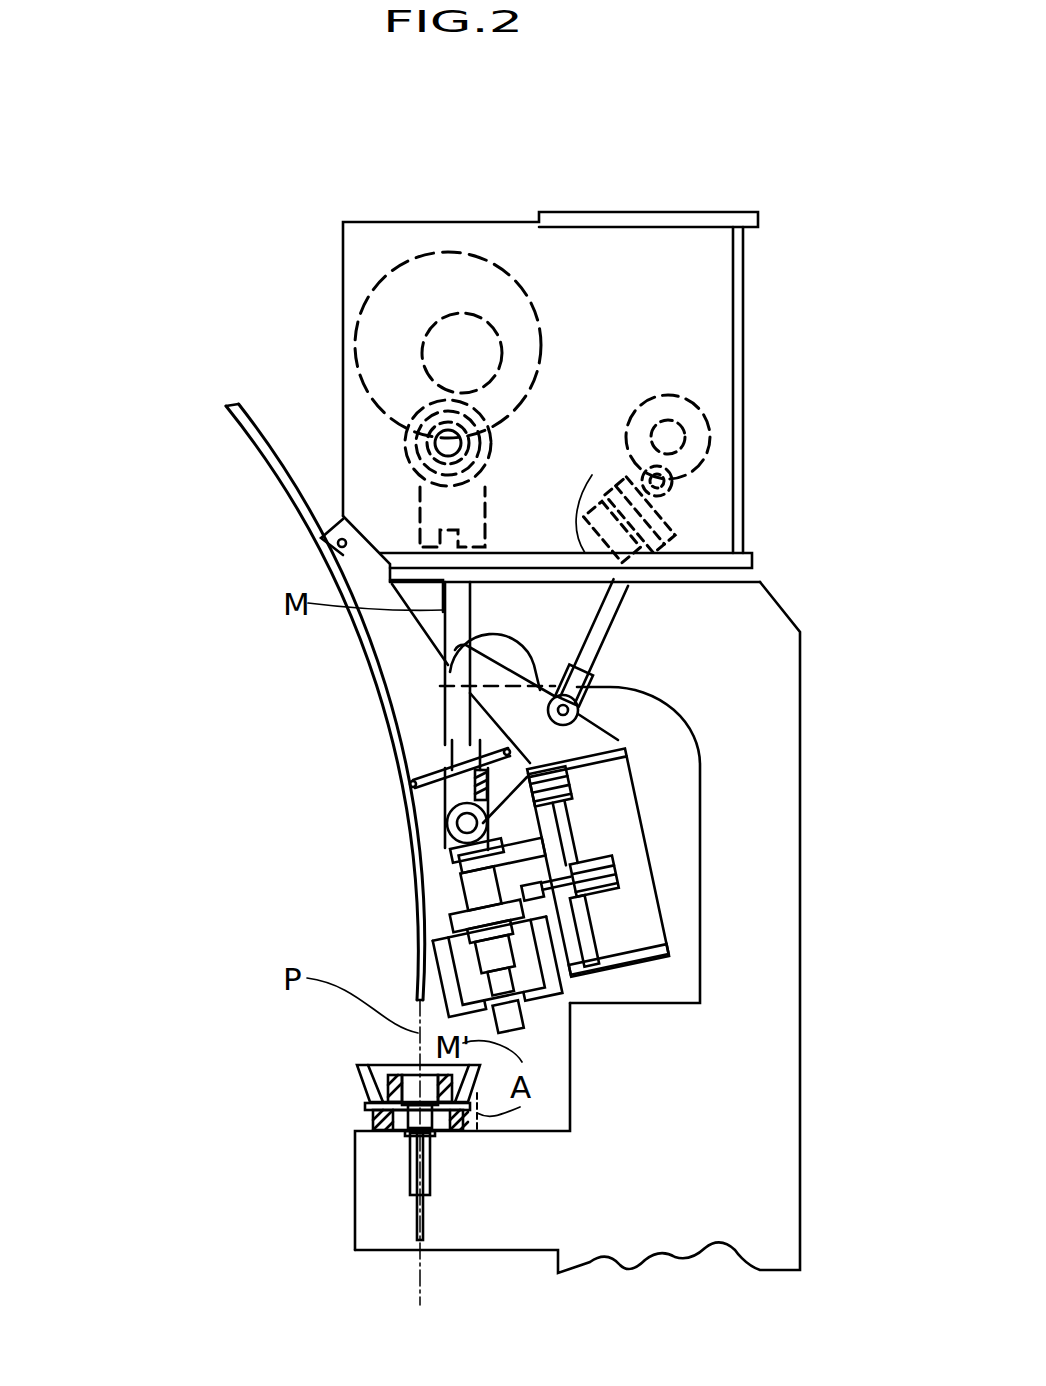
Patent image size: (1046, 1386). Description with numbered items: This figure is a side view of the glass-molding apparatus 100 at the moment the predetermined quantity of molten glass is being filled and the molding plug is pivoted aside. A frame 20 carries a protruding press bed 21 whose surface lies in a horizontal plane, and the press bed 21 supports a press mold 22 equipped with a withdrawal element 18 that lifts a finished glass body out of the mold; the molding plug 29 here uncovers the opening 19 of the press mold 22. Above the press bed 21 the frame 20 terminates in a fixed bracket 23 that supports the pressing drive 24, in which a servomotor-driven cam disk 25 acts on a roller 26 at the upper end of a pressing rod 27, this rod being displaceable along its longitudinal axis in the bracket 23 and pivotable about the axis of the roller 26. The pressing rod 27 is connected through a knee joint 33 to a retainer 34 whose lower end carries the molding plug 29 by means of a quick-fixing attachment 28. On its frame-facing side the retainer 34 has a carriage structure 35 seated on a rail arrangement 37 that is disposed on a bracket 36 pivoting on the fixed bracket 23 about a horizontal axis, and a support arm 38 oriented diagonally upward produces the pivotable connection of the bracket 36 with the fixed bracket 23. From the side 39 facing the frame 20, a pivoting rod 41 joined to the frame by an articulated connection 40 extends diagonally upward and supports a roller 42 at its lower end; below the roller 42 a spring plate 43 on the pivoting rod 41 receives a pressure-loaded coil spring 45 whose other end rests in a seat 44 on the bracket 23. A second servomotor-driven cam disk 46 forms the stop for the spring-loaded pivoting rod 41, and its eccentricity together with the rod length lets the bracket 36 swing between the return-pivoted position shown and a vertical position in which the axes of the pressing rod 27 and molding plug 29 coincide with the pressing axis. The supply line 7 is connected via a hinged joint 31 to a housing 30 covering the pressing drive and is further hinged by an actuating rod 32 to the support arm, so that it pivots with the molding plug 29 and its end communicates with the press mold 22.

The glass-molding apparatus 100 is at (181, 402).
The supply line 7 is at (266, 462).
The withdrawal element 18 is at (415, 1222).
The opening 19 is at (403, 1063).
The frame 20 is at (773, 765).
The press bed 21 is at (378, 1180).
The press mold 22 is at (365, 1105).
The fixed bracket 23 is at (567, 625).
The pressing drive 24 is at (298, 338).
The cam disk 25 is at (407, 381).
The roller 26 is at (493, 433).
The pressing rod 27 is at (458, 717).
The quick-fixing attachment 28 is at (457, 960).
The molding plug 29 is at (487, 1023).
The housing 30 is at (743, 275).
The hinged joint 31 is at (338, 545).
The actuating rod 32 is at (412, 765).
The knee joint 33 is at (446, 822).
The retainer 34 is at (488, 887).
The carriage structure 35 is at (557, 775).
The bracket 36 is at (627, 848).
The rail arrangement 37 is at (582, 925).
The support arm 38 is at (450, 742).
The side facing the frame 39 is at (487, 613).
The articulated connection 40 is at (440, 687).
The pivoting rod 41 is at (610, 600).
The roller 42 is at (672, 482).
The spring plate 43 is at (672, 515).
The seat 44 is at (585, 497).
The coil spring 45 is at (672, 540).
The cam disk 46 is at (700, 435).